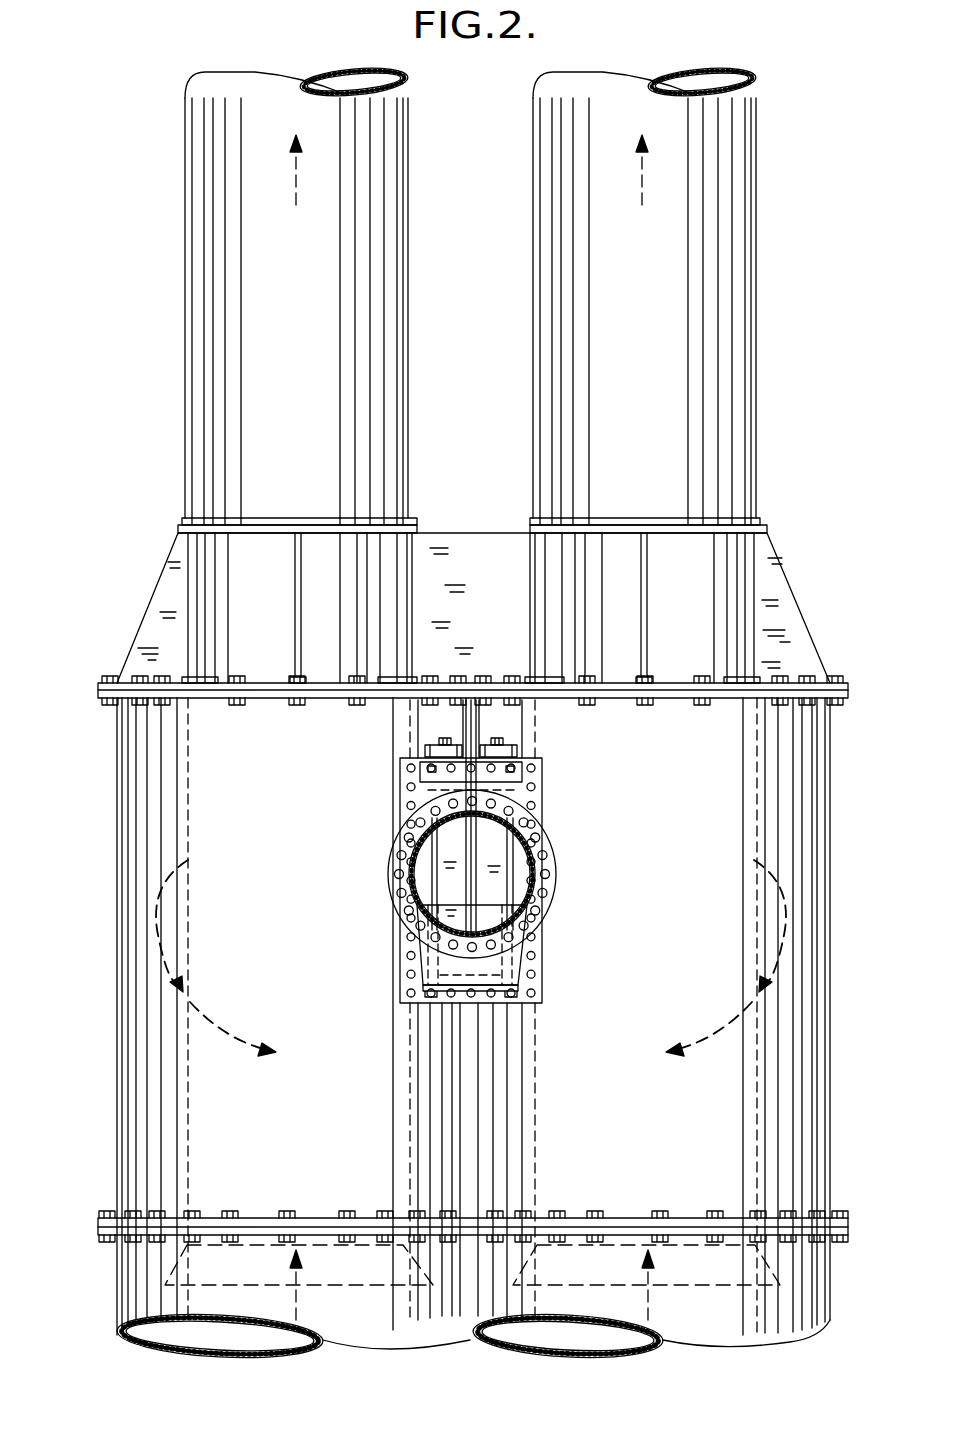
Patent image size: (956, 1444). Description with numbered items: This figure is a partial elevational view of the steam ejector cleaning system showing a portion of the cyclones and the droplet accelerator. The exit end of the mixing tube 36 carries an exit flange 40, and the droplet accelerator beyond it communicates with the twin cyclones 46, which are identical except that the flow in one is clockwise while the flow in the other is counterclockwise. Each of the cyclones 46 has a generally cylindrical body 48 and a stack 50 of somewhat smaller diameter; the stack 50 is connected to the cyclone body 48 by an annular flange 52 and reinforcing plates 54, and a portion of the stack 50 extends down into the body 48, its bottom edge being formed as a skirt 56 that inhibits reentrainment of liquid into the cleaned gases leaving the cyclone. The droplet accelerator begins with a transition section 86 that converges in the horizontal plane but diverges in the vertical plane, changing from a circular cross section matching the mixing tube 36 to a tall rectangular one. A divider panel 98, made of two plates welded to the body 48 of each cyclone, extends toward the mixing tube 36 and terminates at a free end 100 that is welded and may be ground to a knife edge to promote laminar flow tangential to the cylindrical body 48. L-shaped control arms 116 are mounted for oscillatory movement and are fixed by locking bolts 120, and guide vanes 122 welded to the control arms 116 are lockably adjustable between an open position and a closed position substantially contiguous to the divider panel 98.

The mixing tube 36 is at (540, 884).
The exit flange 40 is at (393, 906).
The twin cyclones 46 is at (112, 1054).
The cyclone body 48 is at (122, 848).
The stack 50 is at (200, 350).
The annular flange 52 is at (336, 700).
The reinforcing plates 54 is at (168, 607).
The skirt 56 is at (165, 1268).
The transition section 86 is at (447, 967).
The divider panel 98 is at (464, 872).
The free end 100 is at (476, 928).
The control arms 116 is at (425, 750).
The locking bolts 120 is at (445, 738).
The guide vanes 122 is at (450, 855).